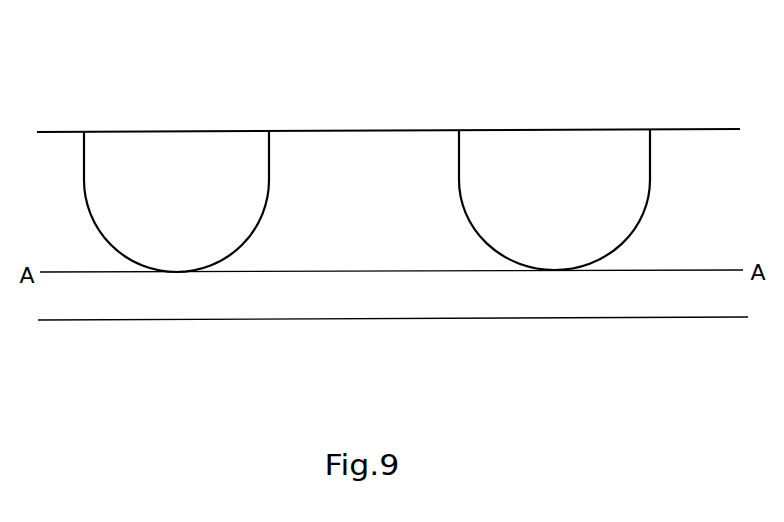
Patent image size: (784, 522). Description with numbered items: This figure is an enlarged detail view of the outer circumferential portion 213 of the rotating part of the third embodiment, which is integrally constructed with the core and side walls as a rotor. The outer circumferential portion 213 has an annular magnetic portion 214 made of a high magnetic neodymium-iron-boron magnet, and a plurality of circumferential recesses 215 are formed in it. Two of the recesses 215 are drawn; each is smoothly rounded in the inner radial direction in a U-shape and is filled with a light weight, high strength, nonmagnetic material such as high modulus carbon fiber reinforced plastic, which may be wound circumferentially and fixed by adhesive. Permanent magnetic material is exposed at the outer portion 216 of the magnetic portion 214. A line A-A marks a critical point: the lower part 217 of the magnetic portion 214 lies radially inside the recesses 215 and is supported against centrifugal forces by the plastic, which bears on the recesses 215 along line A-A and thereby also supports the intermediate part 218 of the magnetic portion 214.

The outer circumferential portion 213 is at (547, 127).
The annular magnetic portion 214 is at (361, 152).
The circumferential recesses 215 is at (183, 170).
The outer portion 216 is at (432, 128).
The lower part 217 is at (187, 300).
The intermediate part 218 is at (386, 240).